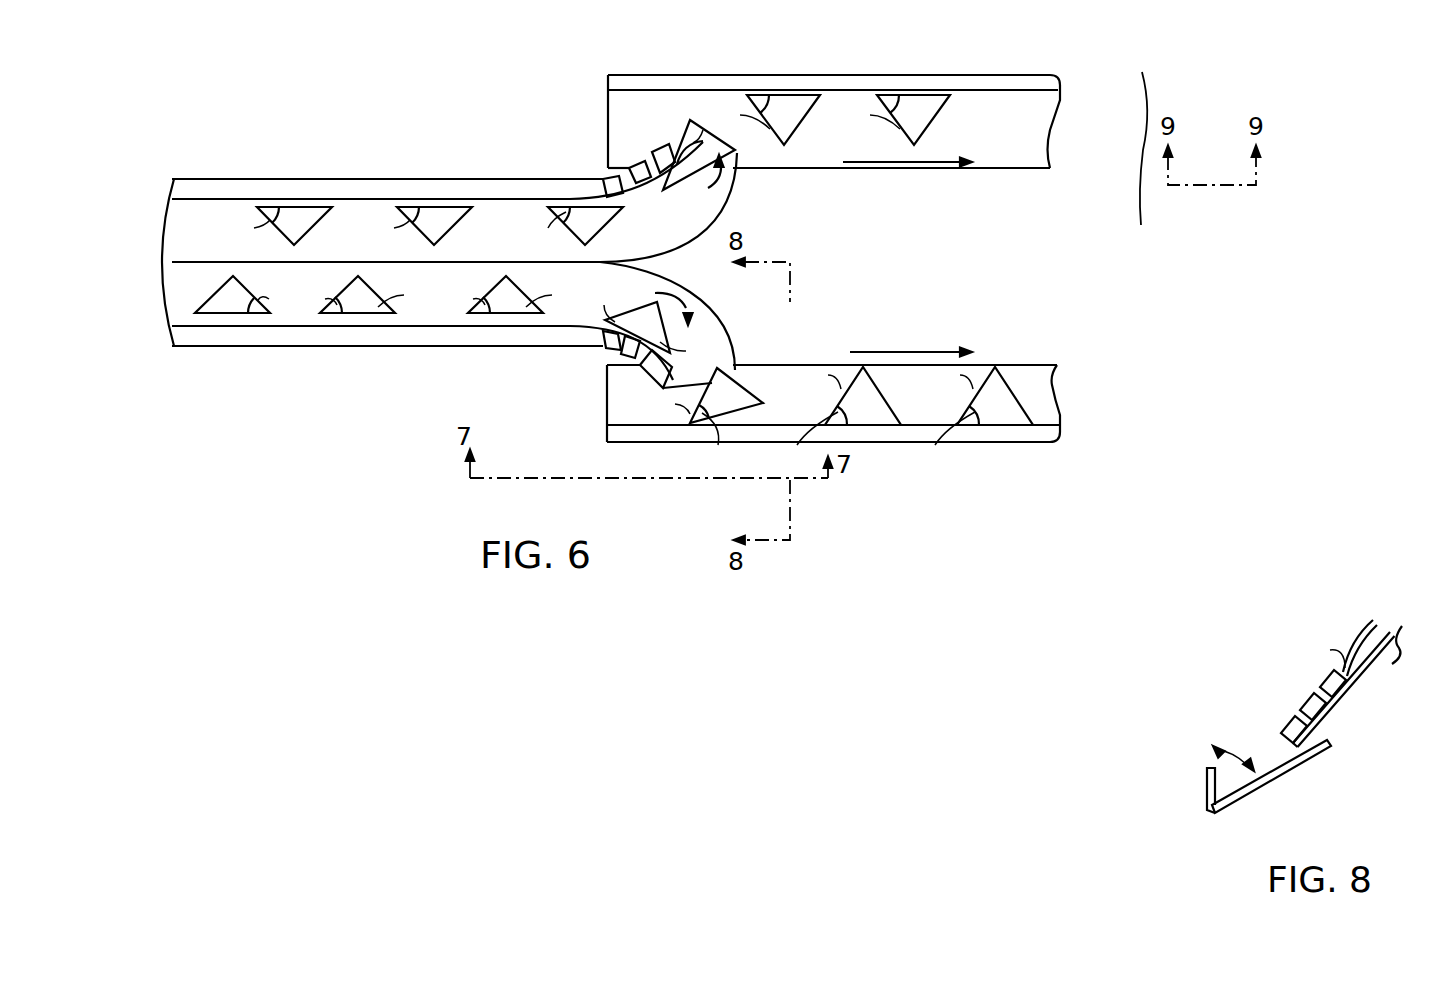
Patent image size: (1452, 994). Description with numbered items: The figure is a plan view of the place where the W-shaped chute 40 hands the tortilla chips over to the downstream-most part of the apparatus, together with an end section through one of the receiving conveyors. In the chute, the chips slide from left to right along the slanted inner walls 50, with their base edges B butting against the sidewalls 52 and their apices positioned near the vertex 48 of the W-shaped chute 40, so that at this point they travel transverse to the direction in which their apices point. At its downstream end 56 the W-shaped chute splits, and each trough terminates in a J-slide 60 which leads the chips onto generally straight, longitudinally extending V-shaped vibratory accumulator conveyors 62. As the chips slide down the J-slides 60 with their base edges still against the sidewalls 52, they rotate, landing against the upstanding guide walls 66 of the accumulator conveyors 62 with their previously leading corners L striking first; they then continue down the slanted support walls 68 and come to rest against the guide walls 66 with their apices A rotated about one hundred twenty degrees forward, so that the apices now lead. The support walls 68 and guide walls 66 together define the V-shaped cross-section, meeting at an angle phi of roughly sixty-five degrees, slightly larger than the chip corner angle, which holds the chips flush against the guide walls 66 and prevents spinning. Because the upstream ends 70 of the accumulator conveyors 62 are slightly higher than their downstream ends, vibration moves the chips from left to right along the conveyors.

In FIG. 6, the W-shaped chute 40 is at (177, 232).
In FIG. 8, the vertex 48 is at (1390, 630).
In FIG. 6, the slanted inner walls 50 is at (221, 247).
In FIG. 8, the slanted inner walls 50 is at (1370, 663).
In FIG. 6, the sidewalls 52 is at (218, 188).
In FIG. 8, the sidewalls 52 is at (1303, 704).
In FIG. 6, the downstream end 56 is at (560, 150).
In FIG. 6, the J-slide 60 is at (745, 201).
In FIG. 6, the V-shaped vibratory accumulator conveyors 62 is at (1037, 196).
In FIG. 8, the V-shaped vibratory accumulator conveyors 62 is at (1249, 817).
In FIG. 6, the upstanding guide walls 66 is at (1030, 80).
In FIG. 8, the upstanding guide walls 66 is at (1207, 796).
In FIG. 6, the slanted support walls 68 is at (1034, 135).
In FIG. 8, the slanted support walls 68 is at (1258, 783).
In FIG. 6, the upstream ends 70 is at (596, 115).